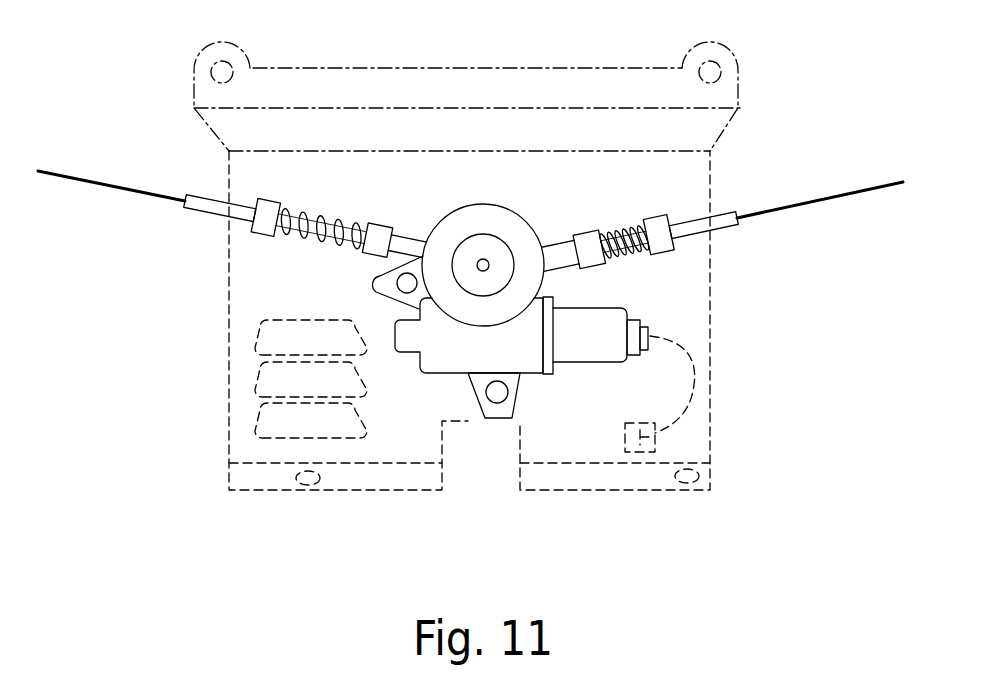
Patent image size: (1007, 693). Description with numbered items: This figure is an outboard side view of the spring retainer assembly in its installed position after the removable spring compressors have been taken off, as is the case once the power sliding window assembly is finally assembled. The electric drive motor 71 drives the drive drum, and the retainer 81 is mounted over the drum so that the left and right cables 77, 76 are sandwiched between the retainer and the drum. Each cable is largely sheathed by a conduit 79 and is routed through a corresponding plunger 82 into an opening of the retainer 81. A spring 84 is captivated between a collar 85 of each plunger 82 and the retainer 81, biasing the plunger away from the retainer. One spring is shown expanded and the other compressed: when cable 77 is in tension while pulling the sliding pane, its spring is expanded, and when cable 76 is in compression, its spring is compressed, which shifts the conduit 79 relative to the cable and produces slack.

The electric drive motor 71 is at (447, 372).
The right cable 76 is at (823, 199).
The left cable 77 is at (128, 189).
The conduit 79 is at (202, 210).
The retainer 81 is at (406, 240).
The plunger 82 is at (328, 226).
The spring 84 is at (305, 238).
The collar 85 is at (268, 205).